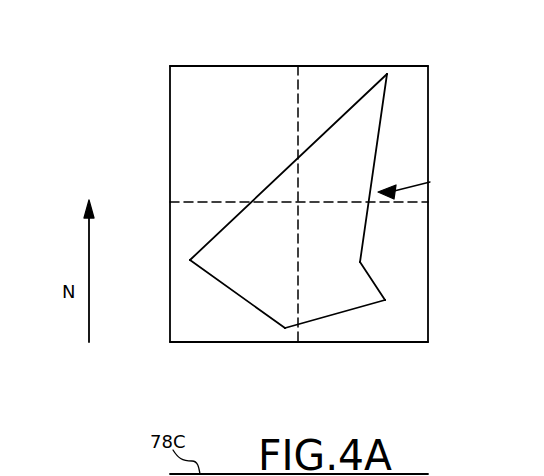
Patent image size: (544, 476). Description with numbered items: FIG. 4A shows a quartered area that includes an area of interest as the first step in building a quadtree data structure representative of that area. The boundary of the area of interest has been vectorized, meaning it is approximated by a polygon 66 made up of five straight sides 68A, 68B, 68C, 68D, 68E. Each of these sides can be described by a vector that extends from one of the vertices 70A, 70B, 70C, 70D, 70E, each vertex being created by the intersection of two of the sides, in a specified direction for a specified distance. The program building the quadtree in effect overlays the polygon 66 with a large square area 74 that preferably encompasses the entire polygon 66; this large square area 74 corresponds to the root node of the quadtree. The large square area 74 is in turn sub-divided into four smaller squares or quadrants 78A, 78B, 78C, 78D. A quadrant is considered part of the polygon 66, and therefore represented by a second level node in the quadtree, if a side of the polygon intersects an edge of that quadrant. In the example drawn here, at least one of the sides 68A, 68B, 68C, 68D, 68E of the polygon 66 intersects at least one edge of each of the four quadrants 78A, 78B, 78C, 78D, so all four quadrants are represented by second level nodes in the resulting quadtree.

The polygon 66 is at (430, 182).
The straight side 68A is at (231, 290).
The straight side 68B is at (337, 313).
The straight side 68C is at (377, 283).
The straight side 68D is at (377, 168).
The straight side 68E is at (275, 180).
The vertex 70A is at (177, 263).
The vertex 70B is at (285, 328).
The vertex 70C is at (385, 302).
The vertex 70D is at (362, 262).
The vertex 70E is at (388, 74).
The large square area 74 is at (255, 343).
The quadrant 78A is at (175, 320).
The quadrant 78B is at (410, 332).
The quadrant 78C is at (190, 88).
The quadrant 78D is at (413, 105).